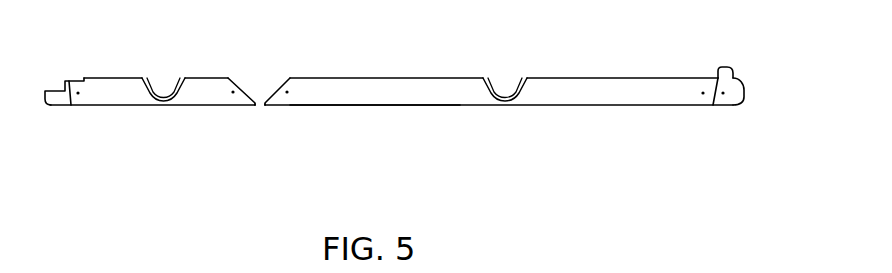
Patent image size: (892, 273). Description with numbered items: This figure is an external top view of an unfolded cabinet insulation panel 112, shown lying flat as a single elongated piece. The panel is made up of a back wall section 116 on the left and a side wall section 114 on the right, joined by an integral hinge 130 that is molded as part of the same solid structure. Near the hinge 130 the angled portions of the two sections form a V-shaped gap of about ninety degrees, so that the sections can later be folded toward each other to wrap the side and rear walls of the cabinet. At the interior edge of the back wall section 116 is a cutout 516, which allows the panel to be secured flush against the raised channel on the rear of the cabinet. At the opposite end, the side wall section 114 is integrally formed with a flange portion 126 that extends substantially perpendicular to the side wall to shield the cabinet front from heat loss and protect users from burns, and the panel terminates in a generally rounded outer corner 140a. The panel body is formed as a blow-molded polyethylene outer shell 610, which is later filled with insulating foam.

The cutout 516 is at (54, 90).
The integral hinge 130 is at (263, 74).
The insulation panel 112 is at (262, 129).
The back wall section 116 is at (153, 106).
The outer shell 610 is at (322, 106).
The side wall section 114 is at (465, 106).
The flange portion 126 is at (725, 66).
The outer corner 140a is at (725, 106).